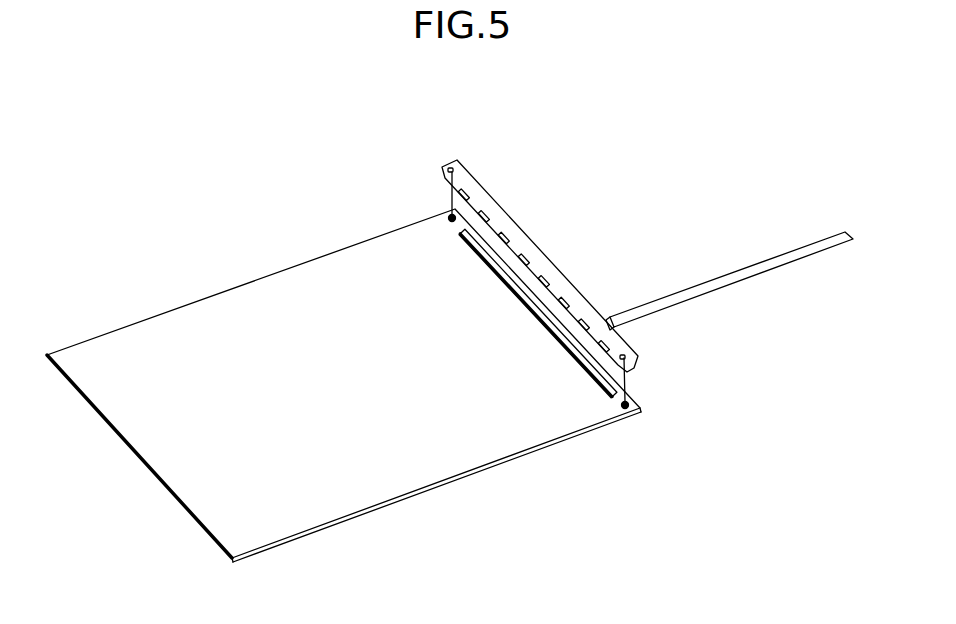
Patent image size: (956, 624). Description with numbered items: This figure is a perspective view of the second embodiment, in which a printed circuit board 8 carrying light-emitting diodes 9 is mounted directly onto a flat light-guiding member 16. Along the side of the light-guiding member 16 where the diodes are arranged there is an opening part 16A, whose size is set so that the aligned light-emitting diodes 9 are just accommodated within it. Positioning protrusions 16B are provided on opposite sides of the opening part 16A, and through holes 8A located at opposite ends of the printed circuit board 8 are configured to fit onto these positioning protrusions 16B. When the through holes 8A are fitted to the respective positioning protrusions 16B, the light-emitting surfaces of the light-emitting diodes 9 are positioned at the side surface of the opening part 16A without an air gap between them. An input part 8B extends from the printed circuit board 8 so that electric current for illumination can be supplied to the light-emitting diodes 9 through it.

The light-guiding member 16 is at (160, 338).
The opening part 16A is at (487, 268).
The positioning protrusions 16B is at (627, 403).
The printed circuit board 8 is at (490, 216).
The through holes 8A is at (631, 353).
The input part 8B is at (717, 283).
The light-emitting diodes 9 is at (542, 288).